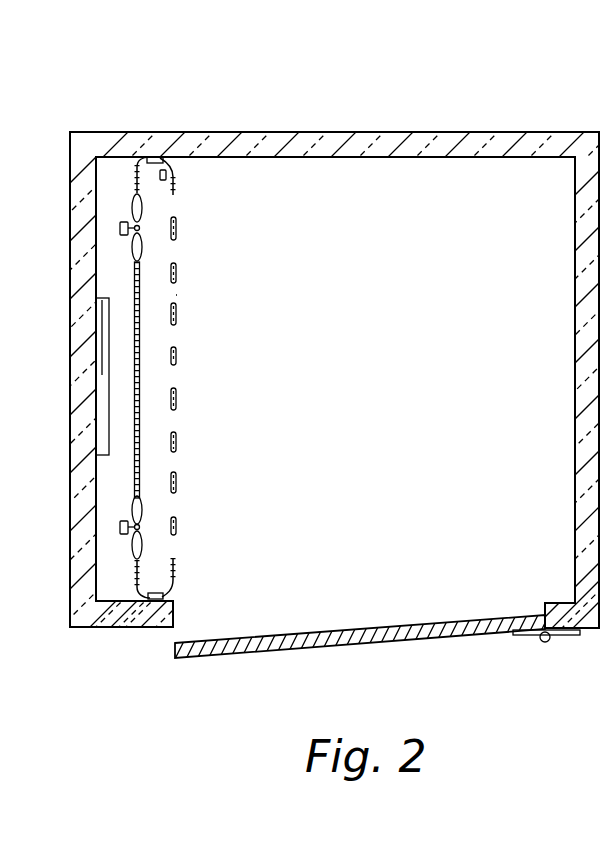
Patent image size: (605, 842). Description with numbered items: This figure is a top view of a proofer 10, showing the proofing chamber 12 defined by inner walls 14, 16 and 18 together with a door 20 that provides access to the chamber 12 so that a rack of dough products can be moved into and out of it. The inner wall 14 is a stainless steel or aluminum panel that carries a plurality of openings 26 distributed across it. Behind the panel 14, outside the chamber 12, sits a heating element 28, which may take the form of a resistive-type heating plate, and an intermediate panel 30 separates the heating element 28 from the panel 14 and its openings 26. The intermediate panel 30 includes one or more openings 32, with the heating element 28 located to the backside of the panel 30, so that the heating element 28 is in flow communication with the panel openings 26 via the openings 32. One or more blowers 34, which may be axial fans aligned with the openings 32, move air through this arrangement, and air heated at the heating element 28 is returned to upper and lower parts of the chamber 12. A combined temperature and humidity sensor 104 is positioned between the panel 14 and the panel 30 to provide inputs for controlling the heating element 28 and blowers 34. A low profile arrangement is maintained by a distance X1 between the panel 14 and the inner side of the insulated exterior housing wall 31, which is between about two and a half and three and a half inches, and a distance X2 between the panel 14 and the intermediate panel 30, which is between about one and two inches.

The proofer 10 is at (478, 104).
The proofing chamber 12 is at (400, 309).
The inner wall (panel) 14 is at (176, 272).
The inner wall 16 is at (434, 158).
The inner wall 18 is at (575, 373).
The door 20 is at (437, 637).
The openings 26 is at (177, 292).
The heating element 28 is at (108, 382).
The intermediate panel 30 is at (140, 413).
The insulated exterior housing wall 31 is at (73, 290).
The openings 32 is at (142, 200).
The blowers 34 is at (142, 250).
The combined temperature and humidity sensor 104 is at (170, 160).
The distance X1 is at (30, 483).
The distance X2 is at (112, 442).